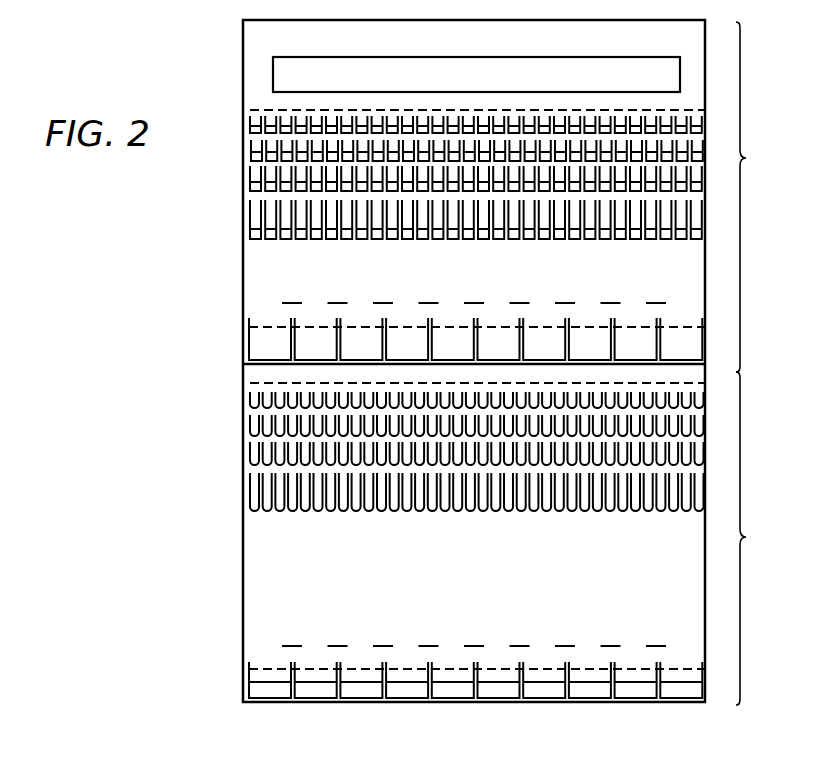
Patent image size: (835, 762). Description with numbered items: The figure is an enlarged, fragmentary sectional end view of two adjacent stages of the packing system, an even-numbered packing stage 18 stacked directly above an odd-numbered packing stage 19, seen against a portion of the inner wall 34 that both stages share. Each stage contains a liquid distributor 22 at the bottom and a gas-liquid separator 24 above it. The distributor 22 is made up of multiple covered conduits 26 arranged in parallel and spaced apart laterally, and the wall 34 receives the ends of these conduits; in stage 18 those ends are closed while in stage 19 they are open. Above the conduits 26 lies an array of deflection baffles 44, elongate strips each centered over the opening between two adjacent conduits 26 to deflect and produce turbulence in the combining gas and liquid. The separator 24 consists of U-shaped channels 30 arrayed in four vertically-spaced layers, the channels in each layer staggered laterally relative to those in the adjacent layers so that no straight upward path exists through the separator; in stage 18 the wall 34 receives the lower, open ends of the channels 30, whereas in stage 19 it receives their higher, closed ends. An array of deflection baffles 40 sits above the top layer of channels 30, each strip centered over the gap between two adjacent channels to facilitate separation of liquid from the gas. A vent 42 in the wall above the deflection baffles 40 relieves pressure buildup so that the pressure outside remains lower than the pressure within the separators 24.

The packing stage 18 is at (758, 197).
The packing stage 19 is at (758, 538).
The liquid distributor 22 is at (234, 331).
The gas-liquid separator 24 is at (243, 185).
The conduit 26 is at (262, 353).
The channel 30 is at (256, 228).
The inner wall 34 is at (258, 576).
The deflection baffle 40 is at (272, 109).
The vent 42 is at (273, 70).
The deflection baffle 44 is at (292, 302).